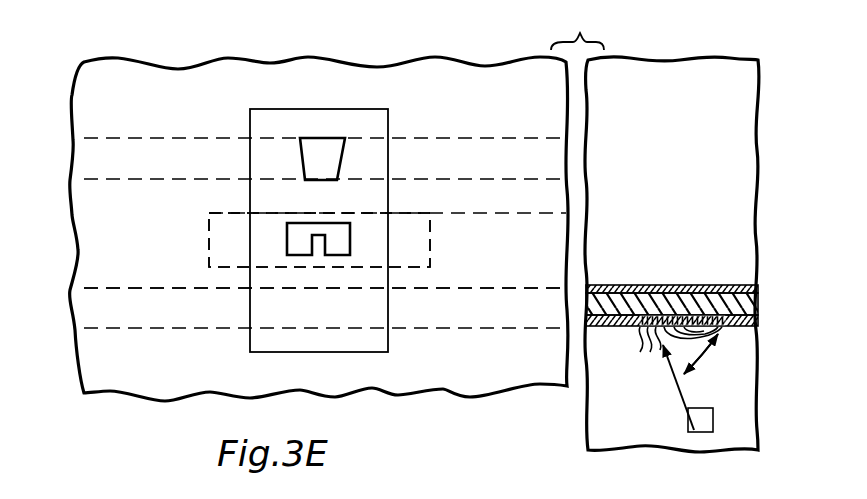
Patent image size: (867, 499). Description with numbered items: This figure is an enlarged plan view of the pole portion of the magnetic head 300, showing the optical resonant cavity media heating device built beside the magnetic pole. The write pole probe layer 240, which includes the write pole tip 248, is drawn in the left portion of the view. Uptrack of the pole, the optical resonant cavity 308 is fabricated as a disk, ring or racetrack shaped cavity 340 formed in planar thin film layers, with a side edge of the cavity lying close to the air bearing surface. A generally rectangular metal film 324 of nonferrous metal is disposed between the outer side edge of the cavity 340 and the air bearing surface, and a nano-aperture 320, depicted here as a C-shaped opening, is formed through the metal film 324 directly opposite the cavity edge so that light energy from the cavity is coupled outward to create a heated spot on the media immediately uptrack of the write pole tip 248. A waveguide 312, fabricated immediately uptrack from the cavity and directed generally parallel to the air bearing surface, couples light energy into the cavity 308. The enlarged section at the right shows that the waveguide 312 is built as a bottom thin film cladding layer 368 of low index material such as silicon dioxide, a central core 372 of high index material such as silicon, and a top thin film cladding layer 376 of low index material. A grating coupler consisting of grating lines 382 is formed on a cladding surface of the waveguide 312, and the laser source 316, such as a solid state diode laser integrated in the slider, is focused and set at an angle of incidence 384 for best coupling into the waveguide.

The magnetic head 300 is at (190, 52).
The metal film 324 is at (262, 340).
The write pole tip 248 is at (316, 152).
The write pole probe layer 240 is at (430, 135).
The nano-aperture 320 is at (350, 237).
The disk, ring or racetrack shaped cavity 340 is at (209, 243).
The optical resonant cavity 308 is at (259, 240).
The waveguide 312 is at (538, 290).
The top thin film cladding layer 376 is at (752, 290).
The central core 372 is at (752, 303).
The bottom thin film cladding layer 368 is at (752, 322).
The grating lines 382 is at (660, 361).
The angle of incidence 384 is at (705, 352).
The laser source 316 is at (713, 418).